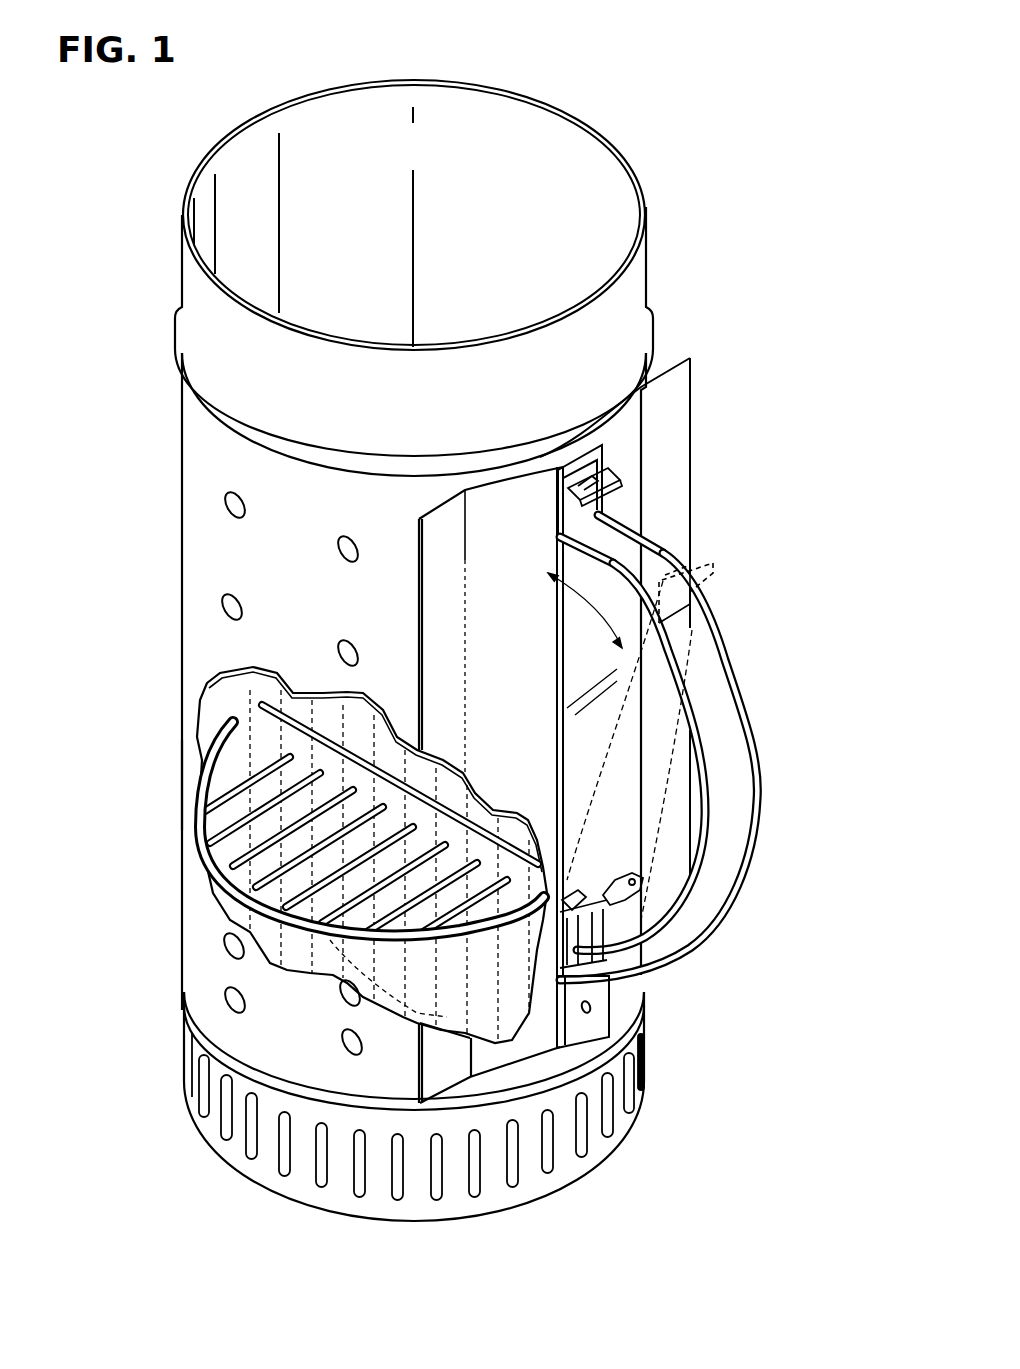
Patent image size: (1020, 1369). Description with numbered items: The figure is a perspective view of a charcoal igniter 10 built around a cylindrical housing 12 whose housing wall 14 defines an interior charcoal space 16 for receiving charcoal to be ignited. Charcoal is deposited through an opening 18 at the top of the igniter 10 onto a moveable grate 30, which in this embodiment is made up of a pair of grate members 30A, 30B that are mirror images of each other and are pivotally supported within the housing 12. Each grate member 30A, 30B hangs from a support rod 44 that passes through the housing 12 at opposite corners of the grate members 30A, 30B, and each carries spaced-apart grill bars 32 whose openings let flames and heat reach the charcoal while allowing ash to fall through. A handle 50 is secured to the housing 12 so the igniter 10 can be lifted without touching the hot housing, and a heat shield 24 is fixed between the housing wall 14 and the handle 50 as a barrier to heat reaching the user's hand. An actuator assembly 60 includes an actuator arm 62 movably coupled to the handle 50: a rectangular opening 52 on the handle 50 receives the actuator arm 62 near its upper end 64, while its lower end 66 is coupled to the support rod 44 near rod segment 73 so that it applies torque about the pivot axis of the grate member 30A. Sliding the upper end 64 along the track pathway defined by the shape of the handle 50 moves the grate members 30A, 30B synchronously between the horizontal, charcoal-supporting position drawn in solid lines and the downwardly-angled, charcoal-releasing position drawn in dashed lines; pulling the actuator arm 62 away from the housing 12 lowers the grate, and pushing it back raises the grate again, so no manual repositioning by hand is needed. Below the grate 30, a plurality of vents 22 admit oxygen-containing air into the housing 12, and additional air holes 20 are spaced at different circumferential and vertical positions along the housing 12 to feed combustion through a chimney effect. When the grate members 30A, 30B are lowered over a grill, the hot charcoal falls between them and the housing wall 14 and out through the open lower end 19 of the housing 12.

The charcoal igniter 10 is at (555, 82).
The cylindrical housing 12 is at (647, 253).
The housing wall 14 is at (303, 960).
The interior charcoal space 16 is at (185, 787).
The opening 18 is at (567, 207).
The open lower end 19 is at (463, 1223).
The air holes 20 is at (217, 597).
The vents 22 is at (552, 1173).
The heat shield 24 is at (677, 418).
The moveable grate 30 is at (319, 941).
The grate member 30A is at (220, 763).
The grate member 30B is at (319, 697).
The grill bars 32 is at (227, 877).
The support rod 44 is at (387, 705).
The handle 50 is at (694, 712).
The rectangular opening 52 is at (625, 550).
The actuator assembly 60 is at (723, 597).
The actuator arm 62 is at (573, 746).
The upper end 64 is at (592, 490).
The lower end 66 is at (663, 886).
The rod segment 73 is at (590, 965).